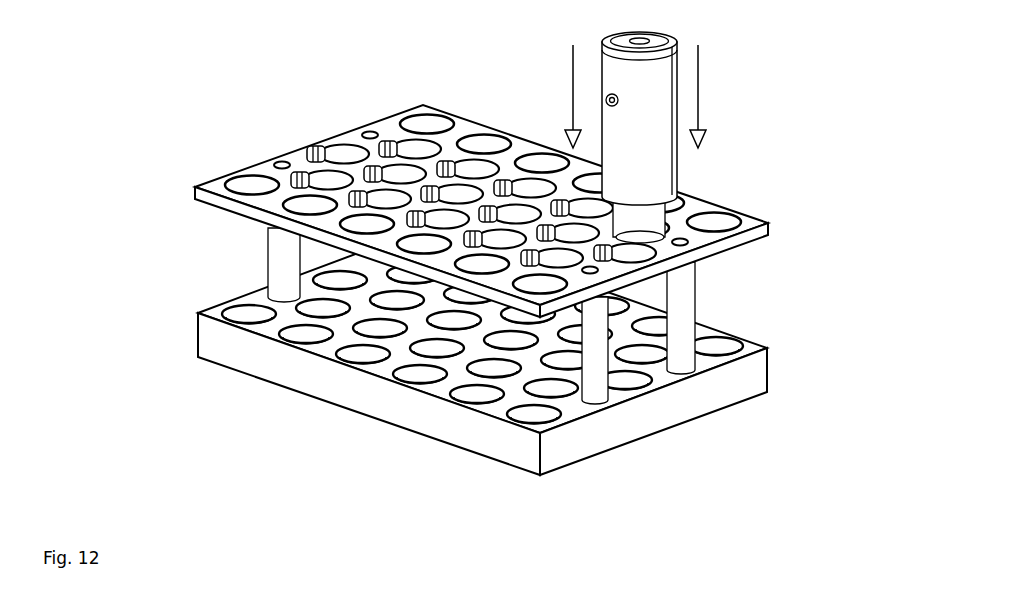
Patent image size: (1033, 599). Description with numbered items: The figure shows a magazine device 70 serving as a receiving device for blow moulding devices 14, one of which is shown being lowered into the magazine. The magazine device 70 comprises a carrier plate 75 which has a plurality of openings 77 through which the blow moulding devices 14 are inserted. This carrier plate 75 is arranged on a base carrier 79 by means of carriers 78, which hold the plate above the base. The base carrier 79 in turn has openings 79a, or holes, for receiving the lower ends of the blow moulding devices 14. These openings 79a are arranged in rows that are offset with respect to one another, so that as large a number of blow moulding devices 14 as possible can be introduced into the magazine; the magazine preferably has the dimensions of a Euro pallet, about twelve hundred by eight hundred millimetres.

The blow moulding device 14 is at (680, 84).
The magazine device 70 is at (533, 305).
The carrier plate 75 is at (281, 162).
The openings 77 is at (481, 267).
The carriers 78 is at (680, 327).
The base carrier 79 is at (482, 366).
The openings 79a is at (472, 385).